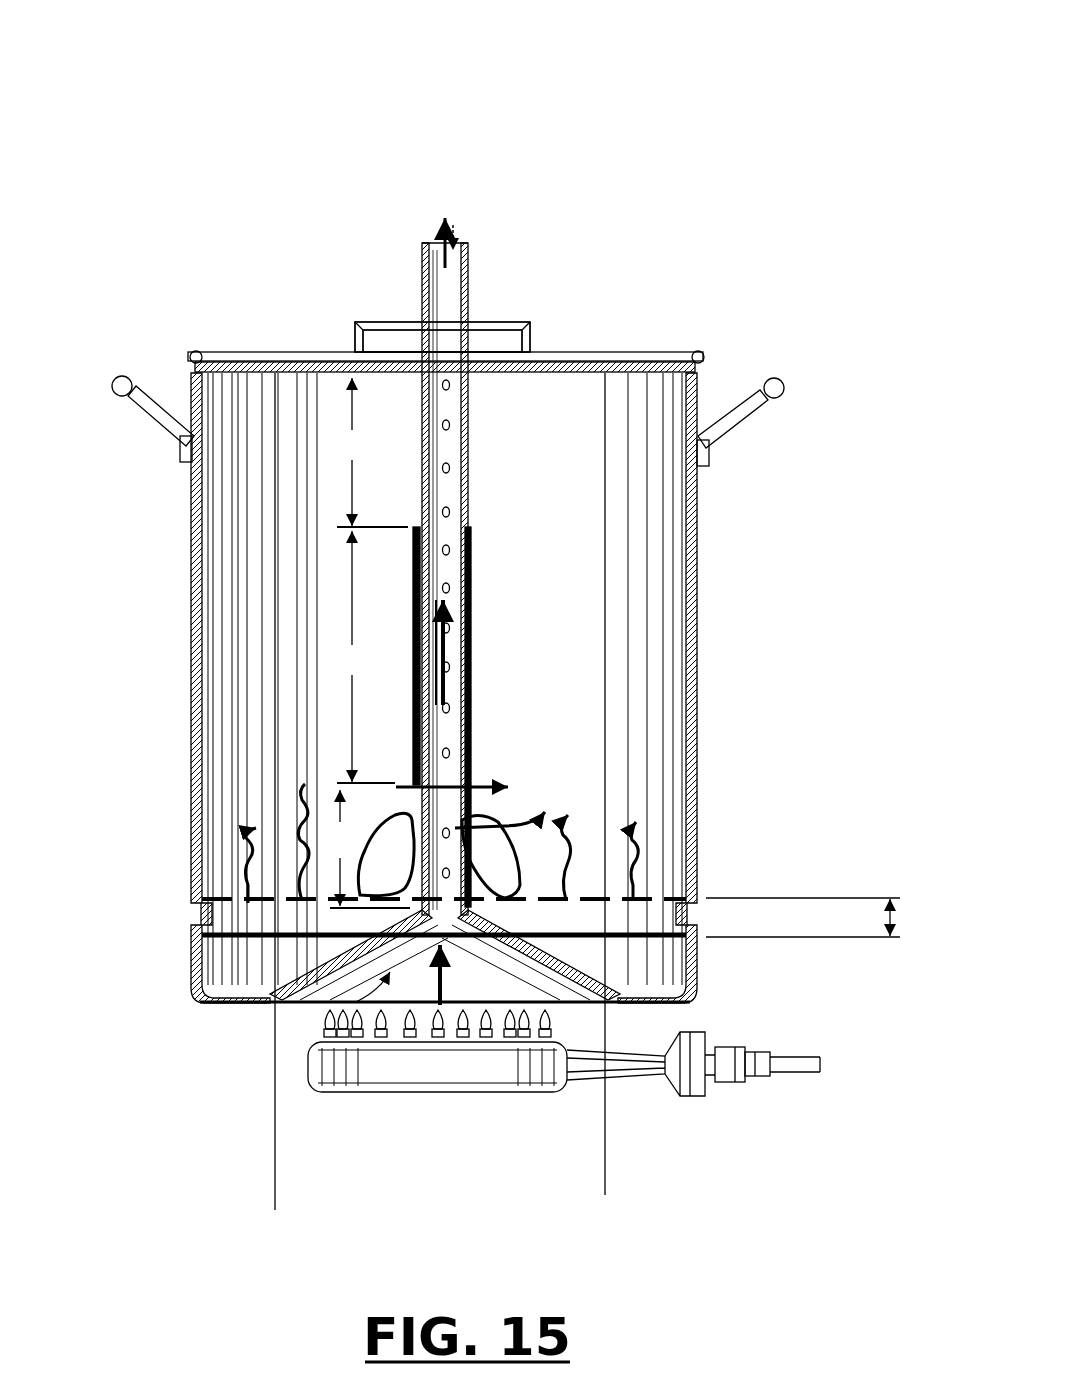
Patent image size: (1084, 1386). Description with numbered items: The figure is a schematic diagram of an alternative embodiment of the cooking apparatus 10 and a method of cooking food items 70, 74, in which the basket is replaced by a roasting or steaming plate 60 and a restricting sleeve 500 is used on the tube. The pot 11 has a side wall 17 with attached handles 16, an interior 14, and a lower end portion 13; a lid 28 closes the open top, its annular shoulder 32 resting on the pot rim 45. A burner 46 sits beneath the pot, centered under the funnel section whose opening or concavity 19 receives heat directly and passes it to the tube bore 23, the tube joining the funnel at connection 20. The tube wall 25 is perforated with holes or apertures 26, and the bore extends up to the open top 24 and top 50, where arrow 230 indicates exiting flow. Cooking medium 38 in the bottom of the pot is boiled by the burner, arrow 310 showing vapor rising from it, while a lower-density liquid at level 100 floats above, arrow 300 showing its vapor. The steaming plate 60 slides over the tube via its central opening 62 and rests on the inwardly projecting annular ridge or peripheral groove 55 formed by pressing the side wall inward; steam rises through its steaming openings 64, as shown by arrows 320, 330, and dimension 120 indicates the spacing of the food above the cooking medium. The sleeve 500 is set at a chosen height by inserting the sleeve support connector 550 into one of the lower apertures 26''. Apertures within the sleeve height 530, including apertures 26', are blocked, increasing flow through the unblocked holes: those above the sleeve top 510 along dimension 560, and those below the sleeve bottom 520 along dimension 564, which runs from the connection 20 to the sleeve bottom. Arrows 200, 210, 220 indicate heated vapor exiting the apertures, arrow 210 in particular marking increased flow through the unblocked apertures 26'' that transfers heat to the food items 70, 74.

The apparatus 10 is at (350, 128).
The pot 11 is at (200, 500).
The lower end portion 13 is at (210, 1000).
The interior 14 is at (537, 557).
The handles 16 is at (778, 375).
The side wall 17 is at (192, 680).
The opening or concavity 19 is at (300, 1005).
The connection 20 is at (384, 970).
The tube bore 23 is at (438, 329).
The open top 24 is at (456, 245).
The tube wall 25 is at (470, 272).
The holes/openings/apertures 26 is at (403, 730).
The upper apertures 26' is at (509, 523).
The lower apertures 26'' is at (493, 816).
The lid 28 is at (632, 352).
The annular shoulder 32 is at (700, 352).
The pot rim 45 is at (700, 352).
The cooking medium 38 is at (258, 990).
The burner 46 is at (468, 1092).
The top of tube bore 50 is at (462, 245).
The peripheral groove / annular shoulder or ridge 55 is at (200, 913).
The steaming plate 60 is at (658, 892).
The central opening 62 is at (457, 975).
The steaming openings 64 is at (573, 857).
The food item 70 is at (478, 870).
The food item 74 is at (373, 870).
The liquid level 100 is at (213, 947).
The dimension 120 is at (902, 895).
The arrow 200 is at (437, 992).
The arrow 210 is at (545, 850).
The arrow 220 is at (467, 650).
The arrow 230 is at (424, 264).
The arrow 300 is at (230, 857).
The arrow 310 is at (320, 845).
The arrow 320 is at (560, 860).
The arrow 330 is at (640, 855).
The sleeve 500 is at (468, 632).
The top of sleeve 510 is at (468, 528).
The bottom of sleeve 520 is at (470, 830).
The height of sleeve 530 is at (364, 657).
The sleeve support connector 550 is at (518, 786).
The dimension 560 is at (369, 452).
The dimension 564 is at (367, 849).